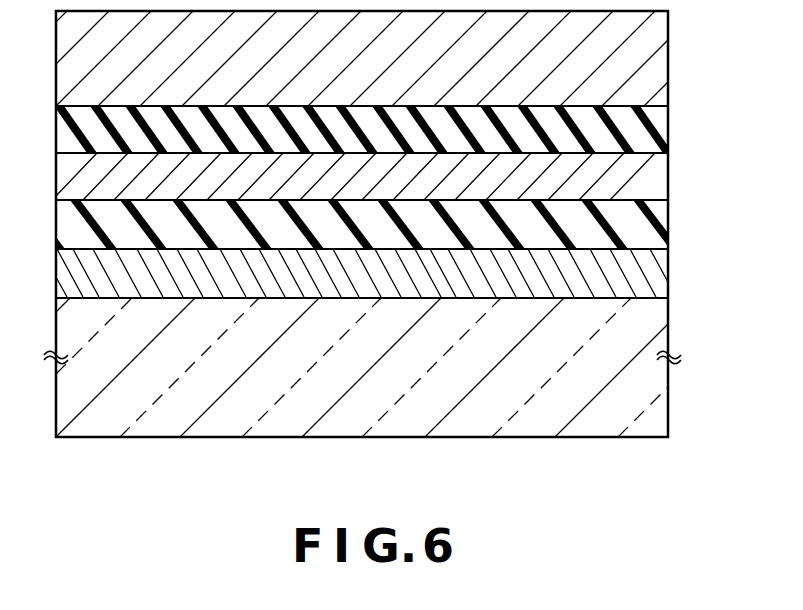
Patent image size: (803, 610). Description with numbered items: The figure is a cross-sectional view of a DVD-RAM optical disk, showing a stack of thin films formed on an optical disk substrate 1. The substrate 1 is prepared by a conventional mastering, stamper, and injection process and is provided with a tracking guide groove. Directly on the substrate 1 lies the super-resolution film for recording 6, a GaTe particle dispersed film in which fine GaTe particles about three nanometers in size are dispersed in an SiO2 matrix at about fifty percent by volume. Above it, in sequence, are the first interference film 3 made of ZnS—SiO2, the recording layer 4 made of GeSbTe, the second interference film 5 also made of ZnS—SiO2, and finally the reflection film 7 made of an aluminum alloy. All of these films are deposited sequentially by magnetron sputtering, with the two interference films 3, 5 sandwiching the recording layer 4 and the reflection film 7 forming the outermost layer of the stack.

The optical disk substrate 1 is at (668, 403).
The first interference film 3 is at (668, 232).
The recording layer 4 is at (668, 185).
The second interference film 5 is at (668, 133).
The super-resolution film for recording 6 is at (668, 285).
The reflection film 7 is at (668, 65).